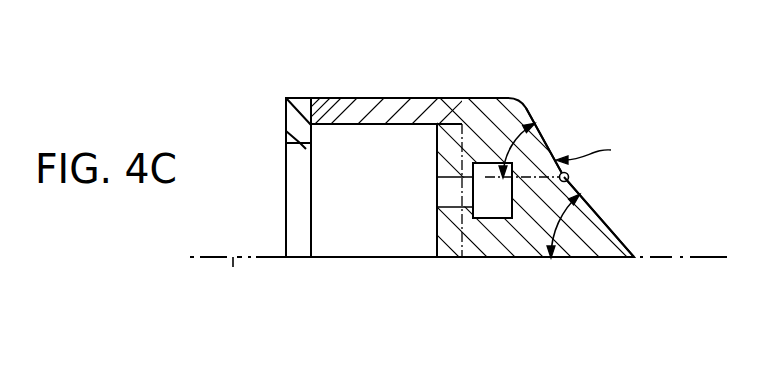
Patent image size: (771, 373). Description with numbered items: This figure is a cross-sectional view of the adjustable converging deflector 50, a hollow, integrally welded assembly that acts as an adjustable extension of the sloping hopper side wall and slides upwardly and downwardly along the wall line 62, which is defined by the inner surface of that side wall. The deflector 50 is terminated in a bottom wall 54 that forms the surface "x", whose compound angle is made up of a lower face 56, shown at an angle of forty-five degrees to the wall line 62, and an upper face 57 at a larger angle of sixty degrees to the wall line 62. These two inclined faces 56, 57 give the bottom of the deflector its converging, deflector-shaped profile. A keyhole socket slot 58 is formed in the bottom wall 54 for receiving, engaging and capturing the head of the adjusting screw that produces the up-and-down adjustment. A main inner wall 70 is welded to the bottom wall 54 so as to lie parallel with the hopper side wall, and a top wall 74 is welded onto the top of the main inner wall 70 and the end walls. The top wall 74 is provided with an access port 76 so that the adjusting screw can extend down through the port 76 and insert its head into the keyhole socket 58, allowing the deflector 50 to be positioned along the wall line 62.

The adjustable converging deflector 50 is at (521, 55).
The bottom wall 54 is at (533, 224).
The lower face 56 is at (604, 221).
The upper face 57 is at (541, 133).
The keyhole socket slot 58 is at (483, 202).
The wall line 62 is at (232, 274).
The main inner wall 70 is at (342, 99).
The top wall 74 is at (287, 127).
The access port 76 is at (298, 144).